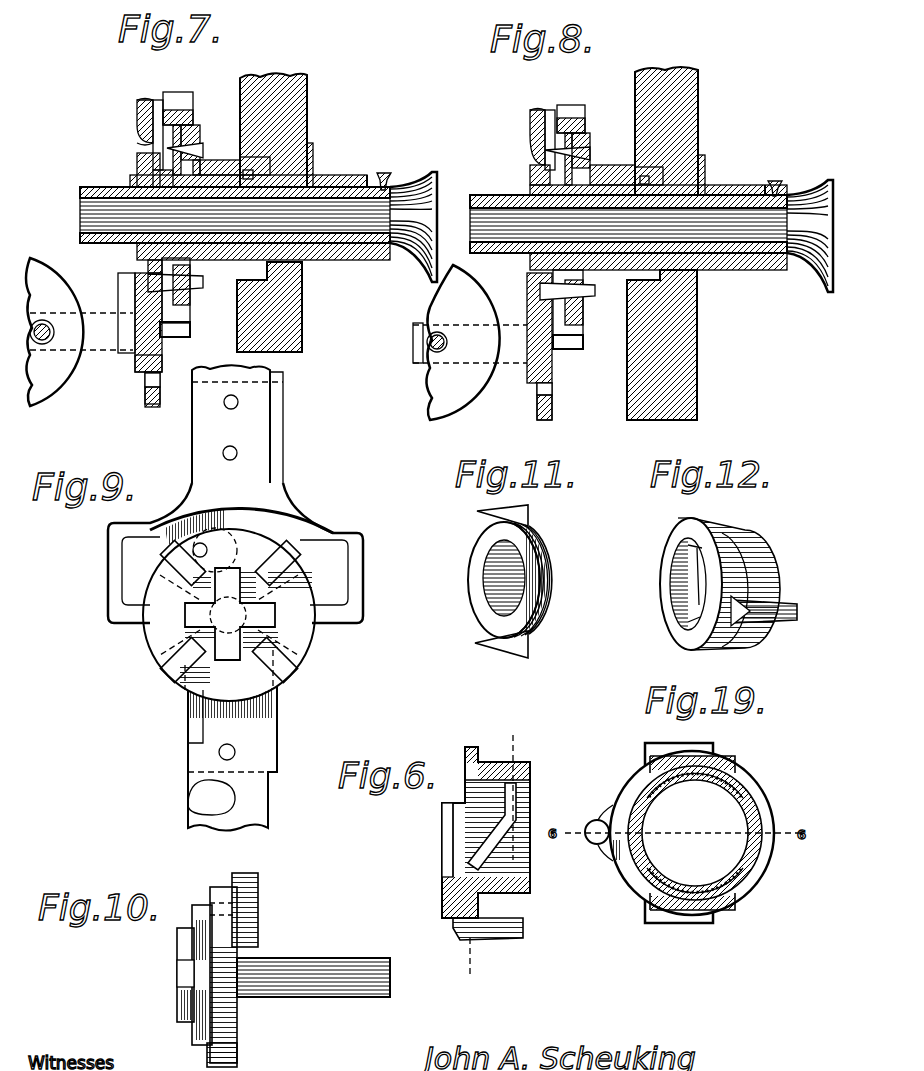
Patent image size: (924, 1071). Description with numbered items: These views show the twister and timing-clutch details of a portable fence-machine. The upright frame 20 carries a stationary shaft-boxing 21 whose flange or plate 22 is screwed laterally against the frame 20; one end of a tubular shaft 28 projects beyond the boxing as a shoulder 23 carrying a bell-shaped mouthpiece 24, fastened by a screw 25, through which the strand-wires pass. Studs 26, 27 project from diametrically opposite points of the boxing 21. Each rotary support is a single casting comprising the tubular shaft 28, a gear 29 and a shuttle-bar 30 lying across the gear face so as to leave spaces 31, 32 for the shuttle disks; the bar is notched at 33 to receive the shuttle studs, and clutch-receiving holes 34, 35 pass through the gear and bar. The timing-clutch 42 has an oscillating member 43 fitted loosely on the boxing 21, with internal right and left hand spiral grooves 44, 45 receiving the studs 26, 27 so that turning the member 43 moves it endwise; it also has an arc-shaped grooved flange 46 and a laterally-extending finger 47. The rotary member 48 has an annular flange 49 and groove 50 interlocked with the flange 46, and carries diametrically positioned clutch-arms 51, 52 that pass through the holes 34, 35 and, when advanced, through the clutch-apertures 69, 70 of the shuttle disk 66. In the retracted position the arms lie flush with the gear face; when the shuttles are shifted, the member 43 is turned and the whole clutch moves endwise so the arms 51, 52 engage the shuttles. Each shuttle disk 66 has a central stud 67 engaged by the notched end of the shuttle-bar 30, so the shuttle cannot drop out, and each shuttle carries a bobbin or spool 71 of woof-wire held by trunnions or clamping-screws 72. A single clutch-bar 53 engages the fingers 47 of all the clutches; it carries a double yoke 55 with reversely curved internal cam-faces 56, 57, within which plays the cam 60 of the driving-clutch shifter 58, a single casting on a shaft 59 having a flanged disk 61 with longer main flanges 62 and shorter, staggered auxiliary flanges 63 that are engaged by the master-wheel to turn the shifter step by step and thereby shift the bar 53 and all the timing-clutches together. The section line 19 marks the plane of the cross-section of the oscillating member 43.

In FIG. 6, the section line 19 is at (493, 857).
In FIG. 7, the upright frame 20 is at (307, 108).
In FIG. 8, the upright frame 20 is at (702, 115).
In FIG. 7, the stationary shaft-boxing 21 is at (325, 176).
In FIG. 8, the stationary shaft-boxing 21 is at (728, 185).
In FIG. 7, the flange or plate 22 is at (313, 160).
In FIG. 8, the flange or plate 22 is at (705, 160).
In FIG. 7, the shoulder 23 is at (367, 175).
In FIG. 8, the shoulder 23 is at (768, 185).
In FIG. 7, the bell-shaped mouthpiece 24 is at (430, 178).
In FIG. 7, the screw 25 is at (388, 175).
In FIG. 8, the screw 25 is at (780, 183).
In FIG. 7, the stud 26 is at (245, 165).
In FIG. 8, the stud 26 is at (640, 172).
In FIG. 7, the stud 27 is at (240, 300).
In FIG. 8, the stud 27 is at (630, 285).
In FIG. 7, the tubular shaft 28 is at (80, 203).
In FIG. 8, the tubular shaft 28 is at (470, 240).
In FIG. 7, the gear 29 is at (160, 372).
In FIG. 8, the gear 29 is at (578, 108).
In FIG. 7, the shuttle-bar 30 is at (137, 120).
In FIG. 8, the shuttle-bar 30 is at (537, 137).
In FIG. 7, the space 31 is at (158, 100).
In FIG. 8, the space 31 is at (550, 110).
In FIG. 8, the space 32 is at (523, 310).
In FIG. 7, the notch 33 is at (140, 103).
In FIG. 8, the notch 33 is at (530, 112).
In FIG. 7, the clutch-receiving hole 34 is at (170, 145).
In FIG. 8, the clutch-receiving hole 34 is at (545, 150).
In FIG. 7, the clutch-receiving hole 35 is at (150, 278).
In FIG. 8, the clutch-receiving hole 35 is at (543, 284).
In FIG. 7, the timing-clutch 42 is at (190, 320).
In FIG. 8, the timing-clutch 42 is at (585, 312).
In FIG. 7, the oscillating clutch member 43 is at (218, 162).
In FIG. 8, the oscillating clutch member 43 is at (610, 167).
In FIG. 12, the oscillating clutch member 43 is at (770, 552).
In FIG. 19, the oscillating clutch member 43 is at (757, 782).
In FIG. 6, the oscillating clutch member 43 is at (442, 835).
In FIG. 19, the spiral groove 44 is at (698, 779).
In FIG. 12, the spiral groove 45 is at (672, 602).
In FIG. 19, the spiral groove 45 is at (695, 885).
In FIG. 6, the spiral groove 45 is at (500, 830).
In FIG. 12, the arc-shaped grooved flange 46 is at (680, 634).
In FIG. 6, the arc-shaped grooved flange 46 is at (442, 880).
In FIG. 12, the laterally-extending finger 47 is at (790, 608).
In FIG. 19, the laterally-extending finger 47 is at (595, 840).
In FIG. 6, the laterally-extending finger 47 is at (503, 940).
In FIG. 11, the rotary clutch member 48 is at (560, 590).
In FIG. 7, the annular flange 49 is at (190, 333).
In FIG. 8, the annular flange 49 is at (583, 342).
In FIG. 11, the annular flange 49 is at (548, 628).
In FIG. 7, the groove 50 is at (198, 140).
In FIG. 8, the groove 50 is at (588, 150).
In FIG. 11, the groove 50 is at (558, 610).
In FIG. 7, the clutch-arm 51 is at (167, 150).
In FIG. 8, the clutch-arm 51 is at (545, 152).
In FIG. 11, the clutch-arm 51 is at (480, 512).
In FIG. 7, the clutch-arm 52 is at (165, 285).
In FIG. 8, the clutch-arm 52 is at (580, 296).
In FIG. 11, the clutch-arm 52 is at (495, 648).
In FIG. 9, the clutch-bar 53 is at (283, 413).
In FIG. 9, the double yoke 55 is at (322, 530).
In FIG. 9, the cam-face 56 is at (282, 505).
In FIG. 9, the cam-face 57 is at (160, 620).
In FIG. 9, the driving-clutch shifter 58 is at (305, 650).
In FIG. 10, the driving-clutch shifter 58 is at (235, 975).
In FIG. 10, the shaft 59 is at (305, 965).
In FIG. 9, the cam 60 is at (199, 542).
In FIG. 10, the cam 60 is at (252, 885).
In FIG. 10, the flanged disk 61 is at (237, 1050).
In FIG. 9, the main flange 62 is at (295, 570).
In FIG. 10, the main flange 62 is at (198, 1025).
In FIG. 9, the auxiliary flange 63 is at (195, 612).
In FIG. 10, the auxiliary flange 63 is at (177, 997).
In FIG. 7, the shuttle disk 66 is at (147, 387).
In FIG. 8, the shuttle disk 66 is at (552, 388).
In FIG. 7, the central stud 67 is at (138, 356).
In FIG. 7, the clutch-aperture 69 is at (135, 300).
In FIG. 8, the clutch-aperture 69 is at (530, 300).
In FIG. 7, the clutch-aperture 70 is at (160, 400).
In FIG. 8, the clutch-aperture 70 is at (552, 405).
In FIG. 7, the bobbin or spool 71 is at (78, 392).
In FIG. 8, the bobbin or spool 71 is at (495, 390).
In FIG. 7, the trunnions or clamping-screws 72 is at (45, 320).
In FIG. 8, the trunnions or clamping-screws 72 is at (445, 340).